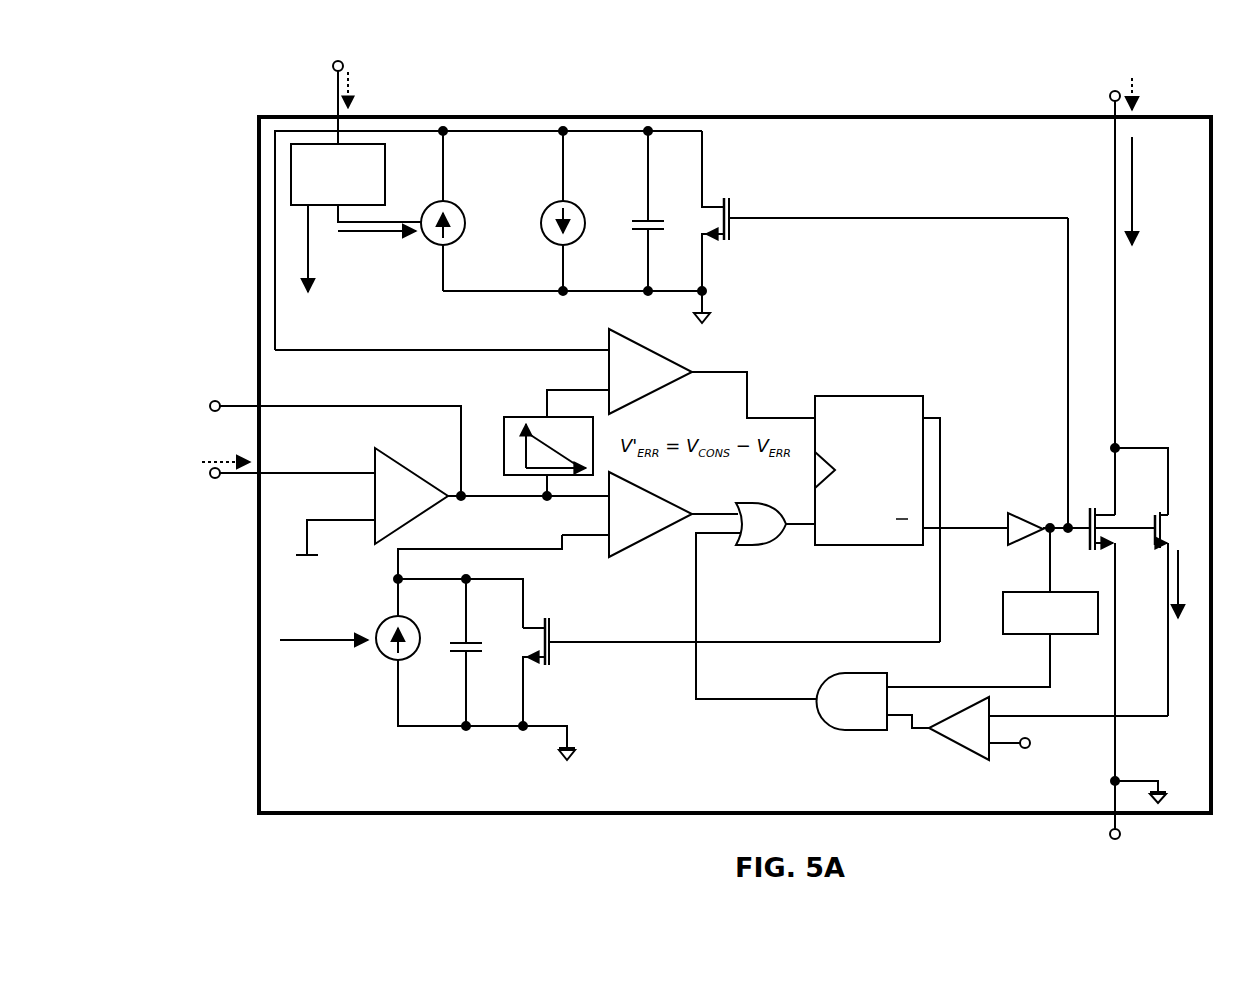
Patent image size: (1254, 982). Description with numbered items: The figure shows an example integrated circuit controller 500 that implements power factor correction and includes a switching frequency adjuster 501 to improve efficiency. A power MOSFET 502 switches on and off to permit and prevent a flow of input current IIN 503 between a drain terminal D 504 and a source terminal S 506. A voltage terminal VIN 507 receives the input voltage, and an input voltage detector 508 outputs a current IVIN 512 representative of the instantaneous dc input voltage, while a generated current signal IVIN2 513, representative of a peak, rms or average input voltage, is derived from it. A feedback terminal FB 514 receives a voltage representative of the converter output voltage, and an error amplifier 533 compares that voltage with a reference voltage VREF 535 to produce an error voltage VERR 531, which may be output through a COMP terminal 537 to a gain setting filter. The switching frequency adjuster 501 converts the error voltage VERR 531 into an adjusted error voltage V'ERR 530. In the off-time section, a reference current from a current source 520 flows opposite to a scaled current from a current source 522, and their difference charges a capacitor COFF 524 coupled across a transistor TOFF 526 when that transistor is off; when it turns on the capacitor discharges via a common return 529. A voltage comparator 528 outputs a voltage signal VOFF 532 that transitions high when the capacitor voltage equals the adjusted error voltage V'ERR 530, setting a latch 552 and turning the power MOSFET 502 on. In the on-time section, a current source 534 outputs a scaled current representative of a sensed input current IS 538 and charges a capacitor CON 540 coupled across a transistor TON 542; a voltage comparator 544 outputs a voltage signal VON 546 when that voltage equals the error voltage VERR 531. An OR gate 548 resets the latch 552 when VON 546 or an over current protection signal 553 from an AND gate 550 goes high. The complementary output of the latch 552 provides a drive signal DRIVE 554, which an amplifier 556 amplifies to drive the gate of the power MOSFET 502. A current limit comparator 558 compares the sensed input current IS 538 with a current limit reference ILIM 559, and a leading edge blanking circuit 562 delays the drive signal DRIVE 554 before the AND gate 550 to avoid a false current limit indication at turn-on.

The integrated circuit controller 500 is at (735, 447).
The switching frequency adjuster 501 is at (508, 406).
The power MOSFET 502 is at (1083, 496).
The input current IIN 503 is at (1138, 162).
The drain terminal D 504 is at (1099, 86).
The source terminal S 506 is at (1110, 838).
The voltage terminal VIN 507 is at (329, 68).
The input voltage detector 508 is at (291, 158).
The current IVIN 512 is at (365, 238).
The generated current signal IVIN2 513 is at (301, 252).
The feedback terminal FB 514 is at (208, 478).
The current source 520 is at (550, 203).
The current source 522 is at (462, 238).
The capacitor COFF 524 is at (660, 236).
The transistor TOFF 526 is at (735, 210).
The voltage comparator 528 is at (619, 373).
The common return 529 is at (694, 306).
The adjusted error voltage V'ERR 530 is at (563, 373).
The error voltage VERR 531 is at (485, 480).
The voltage signal VOFF 532 is at (737, 350).
The error amplifier 533 is at (411, 496).
The current source 534 is at (406, 660).
The reference voltage VREF 535 is at (326, 575).
The COMP terminal 537 is at (214, 398).
The sensed input current IS 538 is at (1190, 572).
The capacitor CON 540 is at (480, 642).
The transistor TON 542 is at (553, 624).
The voltage comparator 544 is at (627, 514).
The voltage signal VON 546 is at (721, 507).
The OR gate 548 is at (775, 524).
The AND gate 550 is at (873, 701).
The latch 552 is at (877, 519).
The over current protection signal 553 is at (734, 592).
The drive signal DRIVE 554 is at (962, 494).
The amplifier 556 is at (1020, 502).
The current limit comparator 558 is at (1048, 728).
The current limit reference ILIM 559 is at (1050, 758).
The leading edge blanking circuit 562 is at (1068, 640).